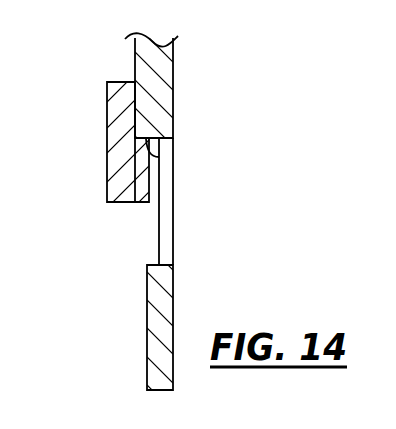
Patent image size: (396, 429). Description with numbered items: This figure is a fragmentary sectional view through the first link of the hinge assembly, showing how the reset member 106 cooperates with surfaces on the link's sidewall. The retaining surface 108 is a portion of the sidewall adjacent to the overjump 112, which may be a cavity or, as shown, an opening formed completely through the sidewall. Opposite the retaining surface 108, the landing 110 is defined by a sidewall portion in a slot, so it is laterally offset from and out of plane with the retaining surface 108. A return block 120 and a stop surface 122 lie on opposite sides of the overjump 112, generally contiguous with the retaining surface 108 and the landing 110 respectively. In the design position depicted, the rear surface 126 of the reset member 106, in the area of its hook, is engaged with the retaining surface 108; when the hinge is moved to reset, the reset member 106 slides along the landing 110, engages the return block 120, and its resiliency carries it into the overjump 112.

The retaining surface 108 is at (135, 53).
The reset member 106 is at (117, 152).
The overjump 112 is at (153, 210).
The return block 120 is at (153, 153).
The rear surface 126 is at (142, 176).
The stop surface 122 is at (156, 266).
The landing 110 is at (147, 312).